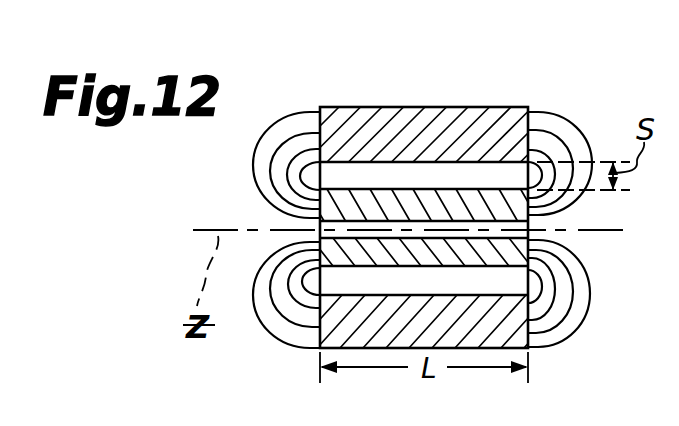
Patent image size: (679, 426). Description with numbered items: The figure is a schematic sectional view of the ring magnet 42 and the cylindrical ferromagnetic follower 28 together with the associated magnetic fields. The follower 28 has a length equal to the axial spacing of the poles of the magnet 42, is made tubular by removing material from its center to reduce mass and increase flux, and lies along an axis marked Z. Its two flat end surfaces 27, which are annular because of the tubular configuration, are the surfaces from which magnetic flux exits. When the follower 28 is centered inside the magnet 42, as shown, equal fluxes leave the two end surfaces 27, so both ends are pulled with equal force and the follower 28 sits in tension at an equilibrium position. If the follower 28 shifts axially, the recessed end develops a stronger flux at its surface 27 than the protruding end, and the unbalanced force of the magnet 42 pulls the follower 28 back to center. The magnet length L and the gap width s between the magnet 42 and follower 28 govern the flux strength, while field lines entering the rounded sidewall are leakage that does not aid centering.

The flat end surfaces 27 is at (308, 212).
The cylindrical follower 28 is at (368, 198).
The ring magnet 42 is at (468, 121).